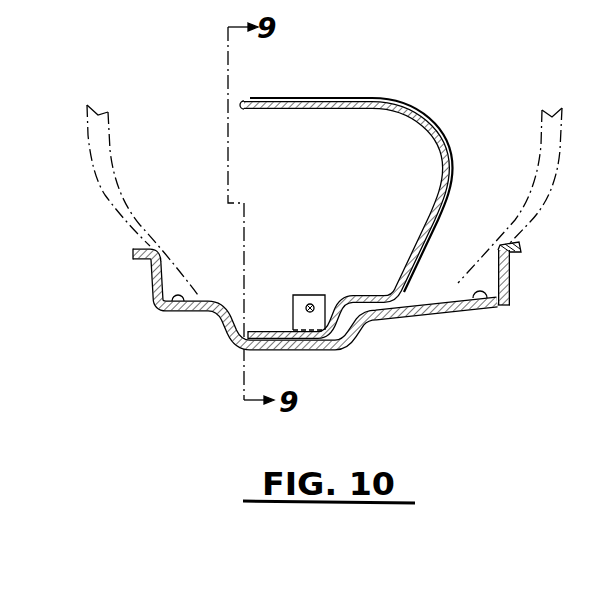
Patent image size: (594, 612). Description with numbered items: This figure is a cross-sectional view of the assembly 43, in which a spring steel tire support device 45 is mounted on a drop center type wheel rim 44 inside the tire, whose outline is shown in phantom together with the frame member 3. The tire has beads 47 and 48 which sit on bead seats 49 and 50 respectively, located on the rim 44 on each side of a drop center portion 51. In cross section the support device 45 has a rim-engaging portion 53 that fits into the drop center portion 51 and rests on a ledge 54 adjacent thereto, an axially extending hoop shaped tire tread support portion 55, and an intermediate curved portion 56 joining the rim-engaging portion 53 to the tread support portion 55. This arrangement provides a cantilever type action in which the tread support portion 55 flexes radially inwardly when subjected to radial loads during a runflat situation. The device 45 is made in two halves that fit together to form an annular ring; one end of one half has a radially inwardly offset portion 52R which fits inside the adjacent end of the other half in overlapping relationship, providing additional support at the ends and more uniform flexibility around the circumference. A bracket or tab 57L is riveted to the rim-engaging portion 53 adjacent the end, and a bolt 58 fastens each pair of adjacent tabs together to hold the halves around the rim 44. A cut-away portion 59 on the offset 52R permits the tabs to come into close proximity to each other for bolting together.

The vehicle door/window frame member (phantom) 3 is at (99, 114).
The assembly 43 is at (221, 333).
The wheel rim 44 is at (511, 297).
The tire support device 45 is at (436, 120).
The bead 47 is at (176, 286).
The bead 48 is at (482, 277).
The bead seat 49 is at (178, 306).
The bead seat 50 is at (481, 306).
The drop center portion 51 is at (302, 348).
The radially inwardly offset portion 52R is at (332, 110).
The rim-engaging portion 53 is at (276, 332).
The ledge 54 is at (387, 312).
The tire tread support portion 55 is at (306, 101).
The intermediate curved portion 56 is at (455, 168).
The bracket or tab 57L is at (317, 294).
The bolt 58 is at (308, 304).
The cut-away portion 59 is at (328, 322).